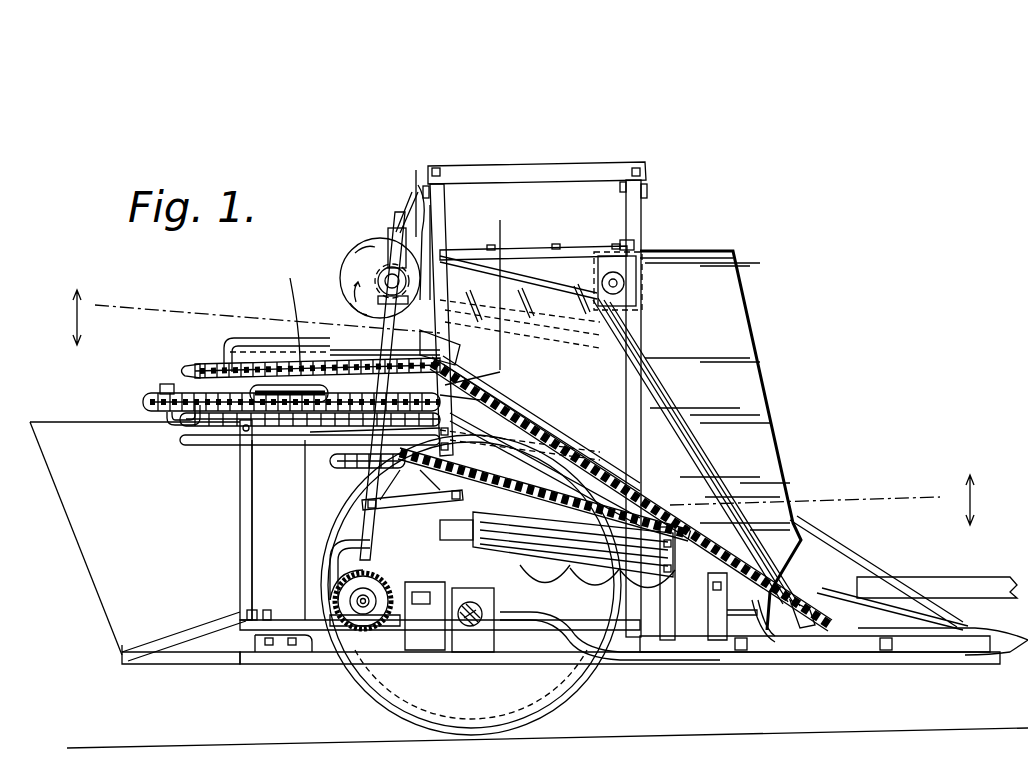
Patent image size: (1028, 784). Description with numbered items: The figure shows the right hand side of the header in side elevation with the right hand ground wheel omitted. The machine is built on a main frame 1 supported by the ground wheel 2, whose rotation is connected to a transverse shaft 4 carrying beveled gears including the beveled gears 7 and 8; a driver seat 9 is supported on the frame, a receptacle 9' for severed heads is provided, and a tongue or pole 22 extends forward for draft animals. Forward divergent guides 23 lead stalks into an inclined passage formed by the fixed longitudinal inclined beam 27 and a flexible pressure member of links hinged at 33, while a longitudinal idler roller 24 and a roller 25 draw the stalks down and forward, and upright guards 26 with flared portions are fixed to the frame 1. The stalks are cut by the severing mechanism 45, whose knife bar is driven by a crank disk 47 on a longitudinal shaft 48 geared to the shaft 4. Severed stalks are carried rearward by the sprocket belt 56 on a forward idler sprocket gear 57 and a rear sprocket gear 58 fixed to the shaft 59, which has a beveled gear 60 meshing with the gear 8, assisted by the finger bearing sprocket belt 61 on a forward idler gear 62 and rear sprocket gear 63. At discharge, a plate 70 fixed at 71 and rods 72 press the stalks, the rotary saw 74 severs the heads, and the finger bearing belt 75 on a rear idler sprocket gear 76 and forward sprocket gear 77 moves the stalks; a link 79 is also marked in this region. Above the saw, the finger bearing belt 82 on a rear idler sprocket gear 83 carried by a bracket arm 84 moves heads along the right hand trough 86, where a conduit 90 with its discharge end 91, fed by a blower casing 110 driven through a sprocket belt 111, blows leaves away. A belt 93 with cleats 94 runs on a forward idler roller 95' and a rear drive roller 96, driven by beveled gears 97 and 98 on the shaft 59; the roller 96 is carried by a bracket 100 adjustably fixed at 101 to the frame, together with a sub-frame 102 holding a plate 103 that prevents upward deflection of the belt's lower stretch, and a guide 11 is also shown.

The main frame 1 is at (280, 660).
The ground wheel 2 is at (70, 308).
The transverse shaft 4 is at (358, 606).
The beveled gear 7 is at (330, 596).
The beveled gear 8 is at (369, 613).
The driver seat 9 is at (280, 360).
The receptacle 9' is at (138, 524).
The vertical guide rod 11 is at (505, 286).
The tongue or pole 22 is at (922, 577).
The forward divergent guides 23 is at (992, 645).
The longitudinal idler roller 24 is at (556, 544).
The roller 25 is at (588, 578).
The upright guards 26 is at (735, 368).
The longitudinal inclined beam 27 is at (530, 440).
The hinged connection of links 33 is at (458, 348).
The stalk severing mechanism 45 is at (712, 655).
The crank disk 47 is at (708, 600).
The longitudinal shaft 48 is at (593, 654).
The sprocket belt 56 is at (688, 520).
The forward idler sprocket gear 57 is at (795, 600).
The rear sprocket gear 58 is at (372, 338).
The shaft 59 is at (378, 300).
The beveled gear 60 is at (352, 562).
The finger bearing sprocket belt 61 is at (576, 452).
The forward idler gear 62 is at (666, 527).
The rear sprocket gear 63 is at (332, 462).
The plate 70 is at (178, 426).
The fixing point of plate 71 is at (544, 494).
The rods 72 is at (210, 426).
The rotary saw 74 is at (502, 372).
The finger bearing belt 75 is at (245, 446).
The rear idler sprocket gear 76 is at (160, 388).
The forward sprocket gear 77 is at (285, 444).
The link 79 is at (474, 397).
The finger bearing belt 82 is at (280, 363).
The rear idler sprocket gear 83 is at (215, 363).
The bracket arm 84 is at (395, 240).
The right hand trough 86 is at (290, 278).
The conduit 90 is at (415, 525).
The discharge end of conduit 91 is at (224, 355).
The belt 93 is at (530, 247).
The cleats 94 is at (568, 248).
The stop block 95' is at (657, 232).
The rear drive roller 96 is at (376, 250).
The beveled gear 97 is at (375, 276).
The beveled gear 98 is at (378, 299).
The bracket 100 is at (416, 190).
The adjustable fixing point 101 is at (430, 205).
The sub-frame 102 is at (478, 258).
The plate 103 is at (560, 295).
The blower casing 110 is at (440, 642).
The sprocket belt 111 is at (473, 652).